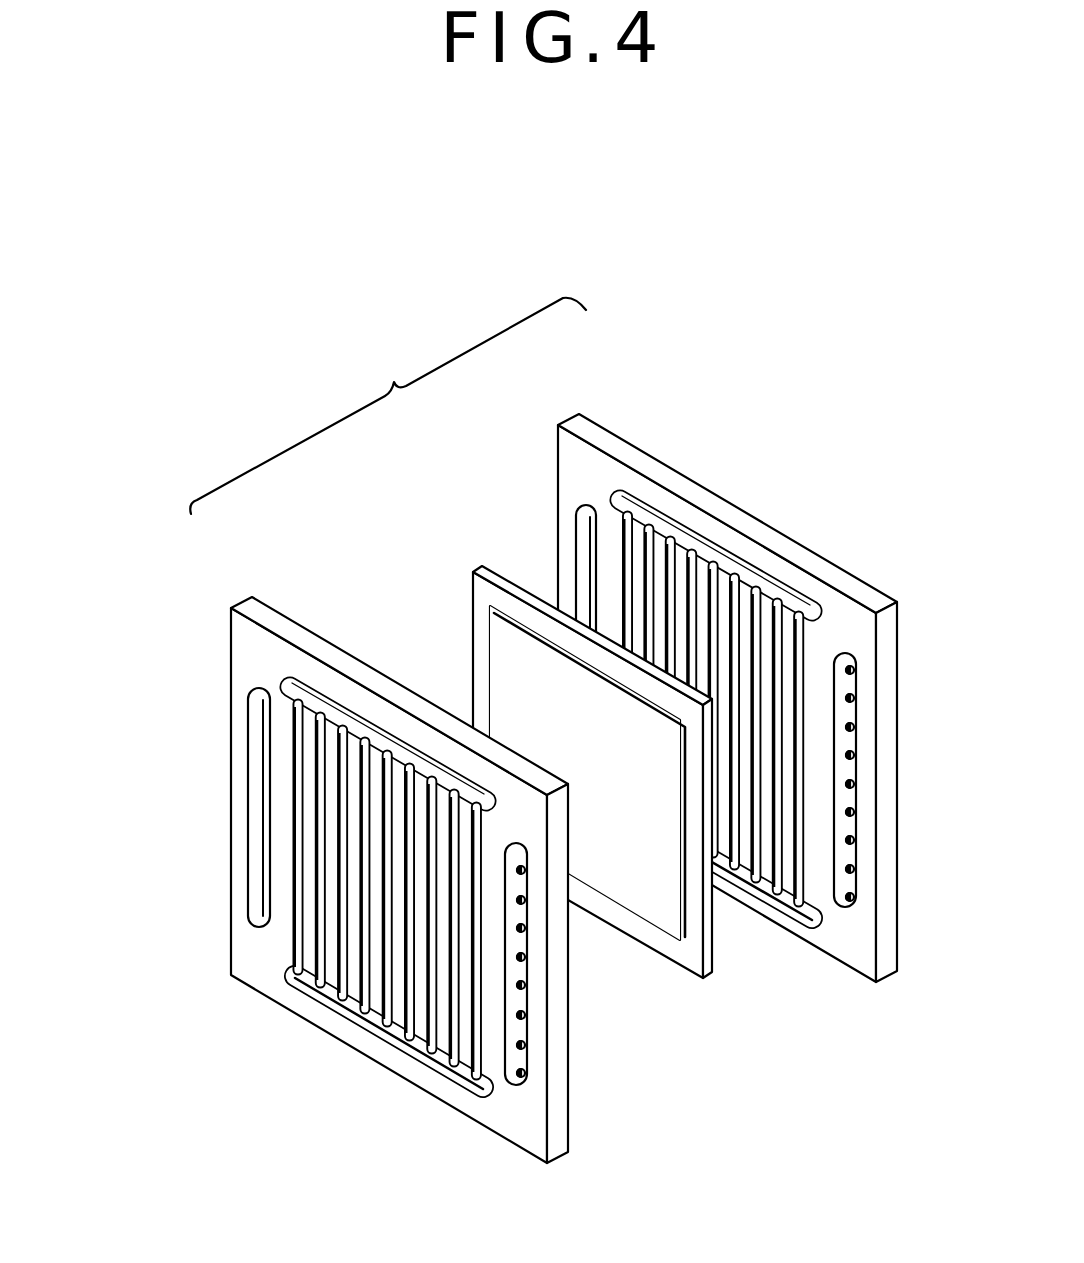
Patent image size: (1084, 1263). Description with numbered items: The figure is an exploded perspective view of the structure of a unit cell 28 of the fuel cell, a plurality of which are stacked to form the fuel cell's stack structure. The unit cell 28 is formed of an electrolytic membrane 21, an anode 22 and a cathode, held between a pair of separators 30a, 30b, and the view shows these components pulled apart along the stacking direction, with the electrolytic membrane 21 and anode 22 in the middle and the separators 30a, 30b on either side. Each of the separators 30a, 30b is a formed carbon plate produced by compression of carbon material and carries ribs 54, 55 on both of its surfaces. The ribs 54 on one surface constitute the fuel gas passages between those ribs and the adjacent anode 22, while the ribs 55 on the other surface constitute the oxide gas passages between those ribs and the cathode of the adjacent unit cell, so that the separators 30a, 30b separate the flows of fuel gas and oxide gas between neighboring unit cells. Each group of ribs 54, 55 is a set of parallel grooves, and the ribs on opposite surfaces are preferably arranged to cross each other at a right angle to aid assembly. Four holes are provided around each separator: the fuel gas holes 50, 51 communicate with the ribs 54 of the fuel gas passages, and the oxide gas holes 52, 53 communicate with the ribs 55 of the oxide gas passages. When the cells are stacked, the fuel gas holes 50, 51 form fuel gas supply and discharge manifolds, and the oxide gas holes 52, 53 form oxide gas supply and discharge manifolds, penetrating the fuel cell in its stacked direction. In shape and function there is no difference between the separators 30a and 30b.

The unit cell 28 is at (388, 406).
The separator 30a is at (262, 610).
The separator 30b is at (597, 437).
The electrolytic membrane 21 is at (500, 572).
The anode 22 is at (505, 648).
The fuel gas hole 50 is at (262, 810).
The fuel gas hole 51 is at (527, 1065).
The oxide gas hole 52 is at (343, 697).
The oxide gas hole 53 is at (392, 1040).
The ribs 54 is at (525, 985).
The ribs 55 is at (365, 1002).